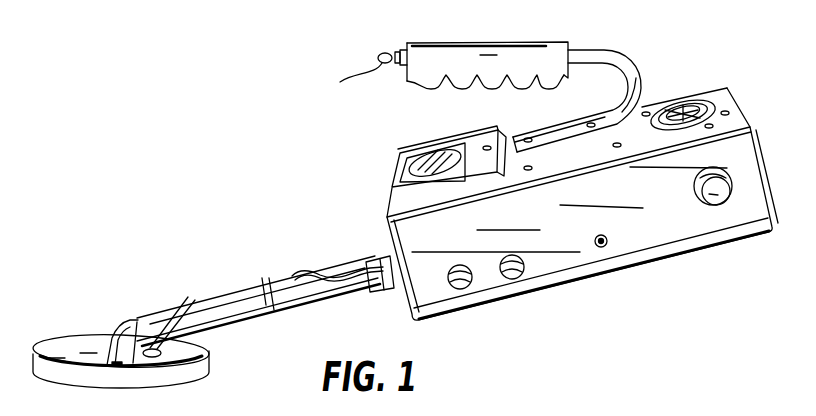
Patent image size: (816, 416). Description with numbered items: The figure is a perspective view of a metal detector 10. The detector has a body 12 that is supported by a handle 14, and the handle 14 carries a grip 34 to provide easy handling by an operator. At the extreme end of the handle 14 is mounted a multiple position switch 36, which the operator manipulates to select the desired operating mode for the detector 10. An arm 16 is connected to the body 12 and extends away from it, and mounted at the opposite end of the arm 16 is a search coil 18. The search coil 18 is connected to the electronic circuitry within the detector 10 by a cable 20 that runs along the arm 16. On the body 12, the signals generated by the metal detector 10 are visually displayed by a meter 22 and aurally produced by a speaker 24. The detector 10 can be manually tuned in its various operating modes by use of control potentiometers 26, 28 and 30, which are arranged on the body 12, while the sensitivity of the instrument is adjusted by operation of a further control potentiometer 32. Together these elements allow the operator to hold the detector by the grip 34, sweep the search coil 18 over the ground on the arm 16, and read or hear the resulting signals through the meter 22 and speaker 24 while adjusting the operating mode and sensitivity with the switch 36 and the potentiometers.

The metal detector 10 is at (360, 169).
The body 12 is at (752, 118).
The handle 14 is at (613, 50).
The arm 16 is at (303, 307).
The search coil 18 is at (203, 353).
The cable 20 is at (182, 305).
The meter 22 is at (470, 142).
The speaker 24 is at (687, 100).
The control potentiometer 26 is at (463, 289).
The control potentiometer 28 is at (517, 279).
The control potentiometer 30 is at (603, 247).
The control potentiometer 32 is at (717, 205).
The grip 34 is at (548, 82).
The multiple position switch 36 is at (359, 74).